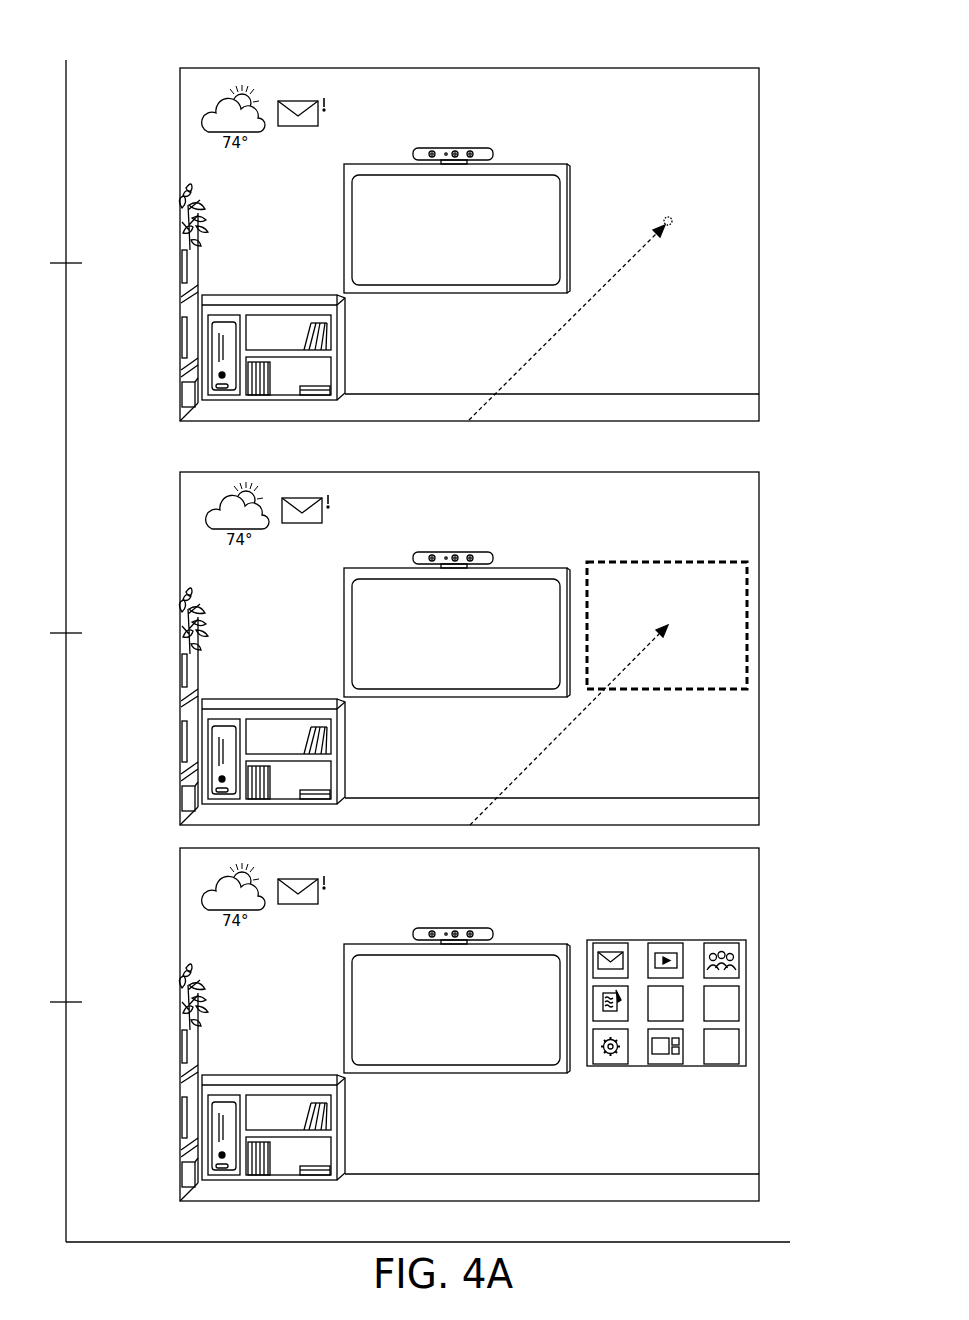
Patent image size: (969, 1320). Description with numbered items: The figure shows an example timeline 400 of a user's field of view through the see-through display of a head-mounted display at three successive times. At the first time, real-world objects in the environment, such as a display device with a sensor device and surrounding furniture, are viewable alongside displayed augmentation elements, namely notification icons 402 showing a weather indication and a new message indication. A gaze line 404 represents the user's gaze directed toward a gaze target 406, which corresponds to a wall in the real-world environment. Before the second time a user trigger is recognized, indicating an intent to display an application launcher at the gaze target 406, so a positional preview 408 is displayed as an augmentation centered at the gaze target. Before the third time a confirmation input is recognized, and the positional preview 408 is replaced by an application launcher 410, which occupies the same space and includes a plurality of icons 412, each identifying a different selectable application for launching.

The timeline 400 is at (722, 39).
The notification icons 402 is at (268, 169).
The gaze line 404 is at (628, 262).
The gaze target 406 is at (668, 220).
The positional preview 408 is at (672, 561).
The application launcher 410 is at (643, 940).
The icons 412 is at (721, 938).